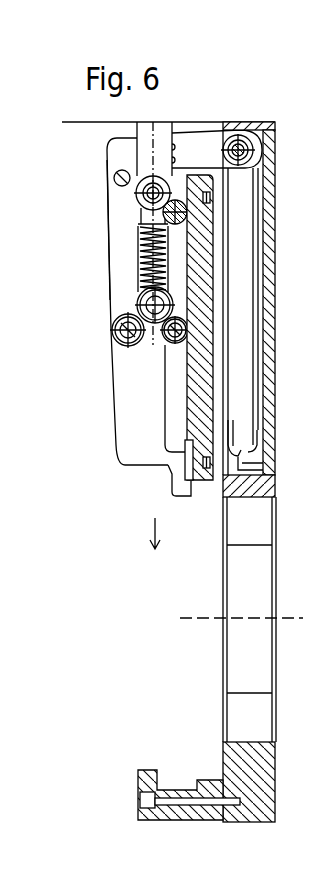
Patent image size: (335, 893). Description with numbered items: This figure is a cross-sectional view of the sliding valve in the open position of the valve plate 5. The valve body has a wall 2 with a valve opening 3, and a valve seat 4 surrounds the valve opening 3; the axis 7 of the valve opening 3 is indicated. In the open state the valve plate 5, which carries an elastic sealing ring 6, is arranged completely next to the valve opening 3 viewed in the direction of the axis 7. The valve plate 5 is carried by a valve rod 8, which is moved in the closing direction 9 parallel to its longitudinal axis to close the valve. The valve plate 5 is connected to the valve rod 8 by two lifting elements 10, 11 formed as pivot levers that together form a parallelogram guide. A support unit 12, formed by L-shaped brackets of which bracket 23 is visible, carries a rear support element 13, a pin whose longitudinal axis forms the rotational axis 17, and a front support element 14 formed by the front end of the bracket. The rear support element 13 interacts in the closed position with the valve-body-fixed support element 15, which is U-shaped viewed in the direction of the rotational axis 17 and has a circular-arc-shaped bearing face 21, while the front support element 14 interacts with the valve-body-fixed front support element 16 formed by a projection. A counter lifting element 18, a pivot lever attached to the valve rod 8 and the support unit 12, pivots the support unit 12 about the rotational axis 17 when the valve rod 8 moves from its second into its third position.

The wall 2 is at (272, 353).
The valve opening 3 is at (263, 582).
The valve seat 4 is at (215, 750).
The valve plate 5 is at (200, 324).
The sealing ring 6 is at (210, 198).
The axis 7 is at (203, 618).
The valve rod 8 is at (143, 150).
The closing direction 9 is at (150, 527).
The lifting element 10 is at (172, 306).
The lifting element 11 is at (170, 207).
The support unit 12 is at (107, 411).
The rear support element 13 is at (242, 148).
The front support element 14 is at (175, 486).
The valve-body-fixed support element 15 is at (228, 449).
The valve-body-fixed support element 16 is at (155, 793).
The rotational axis 17 is at (250, 160).
The counter lifting element 18 is at (140, 318).
The bearing face 21 is at (228, 452).
The L-shaped bracket 23 is at (130, 373).